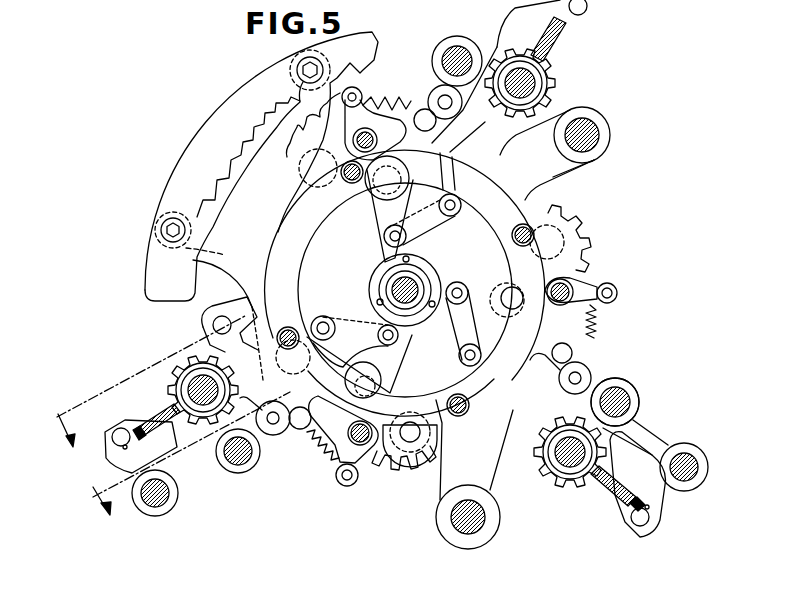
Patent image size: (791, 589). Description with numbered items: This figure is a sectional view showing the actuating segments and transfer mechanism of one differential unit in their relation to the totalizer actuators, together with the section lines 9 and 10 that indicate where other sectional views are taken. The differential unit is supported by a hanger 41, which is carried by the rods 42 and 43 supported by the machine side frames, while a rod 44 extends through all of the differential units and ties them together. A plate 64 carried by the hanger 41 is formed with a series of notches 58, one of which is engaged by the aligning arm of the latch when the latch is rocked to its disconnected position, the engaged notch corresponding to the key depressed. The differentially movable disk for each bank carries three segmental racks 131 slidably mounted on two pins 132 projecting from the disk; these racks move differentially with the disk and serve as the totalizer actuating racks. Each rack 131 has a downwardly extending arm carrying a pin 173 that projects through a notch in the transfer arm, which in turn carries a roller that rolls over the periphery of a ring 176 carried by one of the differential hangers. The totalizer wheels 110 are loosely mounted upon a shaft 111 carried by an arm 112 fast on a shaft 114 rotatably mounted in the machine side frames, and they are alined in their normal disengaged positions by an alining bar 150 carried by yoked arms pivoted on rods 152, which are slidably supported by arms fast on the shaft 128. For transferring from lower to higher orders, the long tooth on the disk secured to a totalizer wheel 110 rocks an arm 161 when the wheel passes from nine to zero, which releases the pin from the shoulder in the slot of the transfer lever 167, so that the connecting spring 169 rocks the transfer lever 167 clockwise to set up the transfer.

The plate 64 is at (200, 146).
The notches 58 is at (252, 128).
The ring 176 is at (300, 251).
The rod 44 is at (415, 282).
The rod 42 is at (605, 129).
The hanger 41 is at (560, 178).
The rod 43 is at (484, 528).
The pin 173 is at (448, 218).
The pins 132 is at (313, 174).
The segmental racks 131 is at (303, 158).
The transfer lever 167 is at (349, 106).
The spring 169 is at (370, 98).
The arm 161 is at (443, 90).
The totalizer wheels 110 is at (548, 65).
The shaft 111 is at (540, 82).
The shaft 114 is at (450, 42).
The arm 112 is at (640, 404).
The alining bar 150 is at (565, 34).
The rods 152 is at (112, 428).
The shaft 128 is at (170, 500).
The section line 9- 9 is at (150, 372).
The section line 10- 10 is at (182, 453).